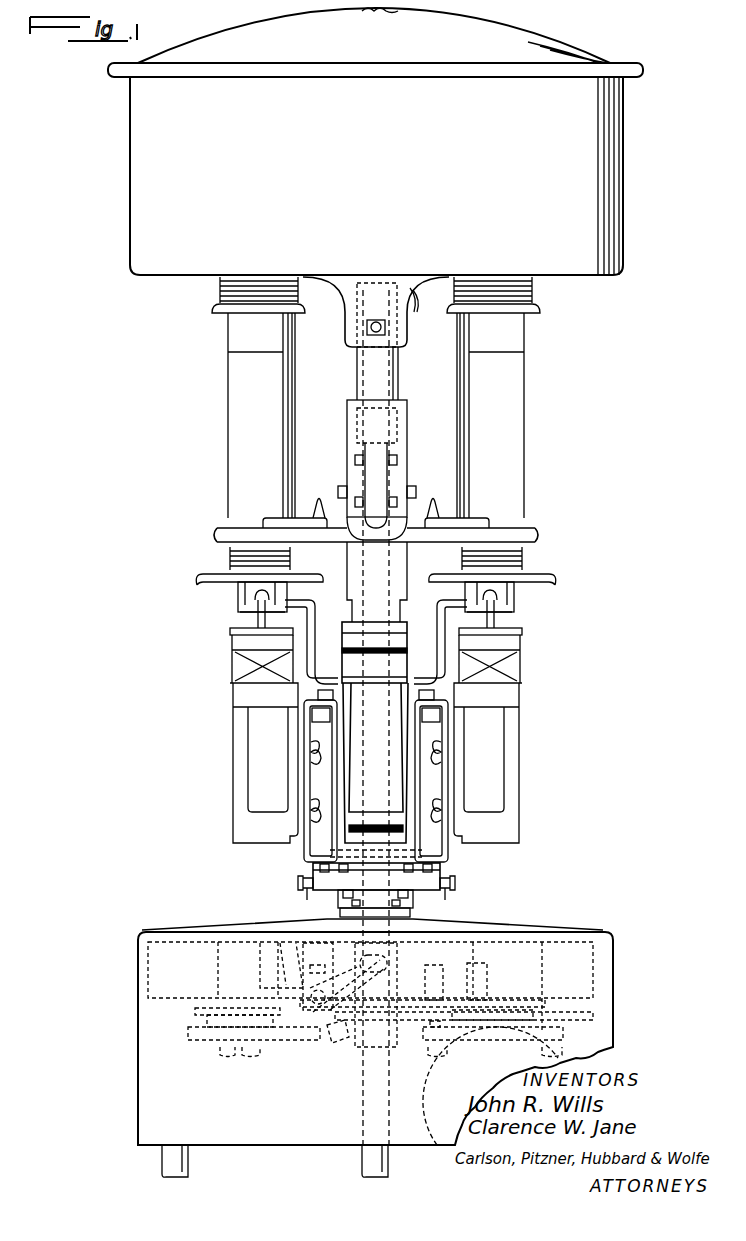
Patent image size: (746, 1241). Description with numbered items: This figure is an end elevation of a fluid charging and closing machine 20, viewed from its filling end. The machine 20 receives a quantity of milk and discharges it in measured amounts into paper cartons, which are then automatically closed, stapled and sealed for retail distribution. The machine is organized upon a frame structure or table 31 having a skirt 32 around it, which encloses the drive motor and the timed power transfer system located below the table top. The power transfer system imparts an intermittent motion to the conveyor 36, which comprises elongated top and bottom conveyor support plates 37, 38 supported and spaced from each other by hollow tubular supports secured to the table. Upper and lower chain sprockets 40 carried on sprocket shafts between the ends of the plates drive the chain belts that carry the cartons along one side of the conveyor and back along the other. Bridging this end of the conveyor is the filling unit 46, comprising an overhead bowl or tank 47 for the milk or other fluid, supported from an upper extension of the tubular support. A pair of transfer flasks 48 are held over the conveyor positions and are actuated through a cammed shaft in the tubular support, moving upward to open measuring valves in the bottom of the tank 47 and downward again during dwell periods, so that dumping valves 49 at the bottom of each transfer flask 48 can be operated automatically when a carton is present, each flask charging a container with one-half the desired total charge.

The overhead bowl or tank 47 is at (150, 200).
The machine 20 is at (203, 362).
The transfer flasks 48 is at (243, 421).
The filling unit 46 is at (538, 504).
The dumping valves 49 is at (243, 608).
The bottom conveyor support plate 38 is at (410, 683).
The chain sprockets 40 is at (328, 827).
The conveyor 36 is at (427, 798).
The top conveyor support plate 37 is at (408, 884).
The frame structure or table 31 is at (162, 960).
The skirt 32 is at (142, 1045).